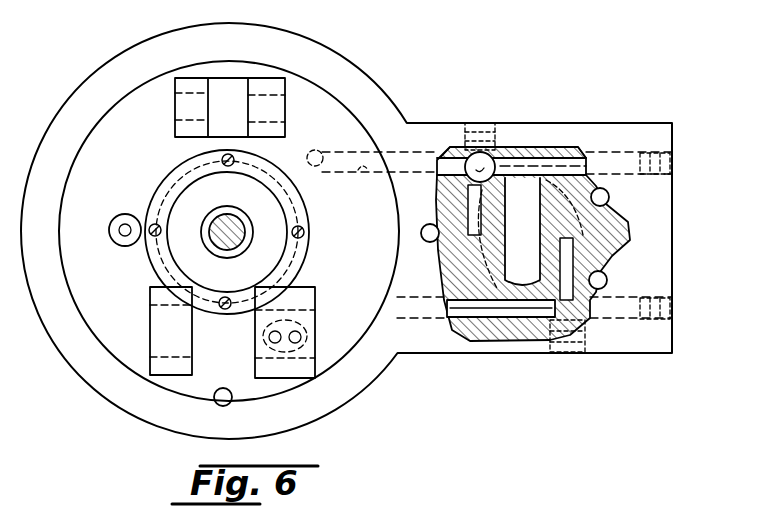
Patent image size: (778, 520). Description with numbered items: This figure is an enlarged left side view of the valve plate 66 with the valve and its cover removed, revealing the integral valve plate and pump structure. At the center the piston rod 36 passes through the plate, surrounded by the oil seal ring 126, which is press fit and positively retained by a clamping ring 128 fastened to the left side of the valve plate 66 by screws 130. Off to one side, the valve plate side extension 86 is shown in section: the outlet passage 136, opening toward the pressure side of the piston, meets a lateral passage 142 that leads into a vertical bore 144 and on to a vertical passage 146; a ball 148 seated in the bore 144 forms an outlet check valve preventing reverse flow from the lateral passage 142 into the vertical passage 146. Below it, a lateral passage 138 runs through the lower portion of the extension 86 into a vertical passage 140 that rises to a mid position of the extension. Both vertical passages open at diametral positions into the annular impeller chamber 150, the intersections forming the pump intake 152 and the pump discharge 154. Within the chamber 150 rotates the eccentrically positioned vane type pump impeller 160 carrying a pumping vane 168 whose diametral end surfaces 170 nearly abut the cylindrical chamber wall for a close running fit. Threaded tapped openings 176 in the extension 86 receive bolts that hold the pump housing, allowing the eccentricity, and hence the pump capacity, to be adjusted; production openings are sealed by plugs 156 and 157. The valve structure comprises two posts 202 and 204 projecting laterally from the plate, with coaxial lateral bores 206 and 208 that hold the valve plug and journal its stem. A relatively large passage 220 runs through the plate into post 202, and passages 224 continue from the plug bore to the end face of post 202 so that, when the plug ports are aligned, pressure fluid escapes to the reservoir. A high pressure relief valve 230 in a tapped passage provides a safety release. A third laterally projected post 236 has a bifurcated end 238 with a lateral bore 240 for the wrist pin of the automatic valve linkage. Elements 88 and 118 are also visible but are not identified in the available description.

The piston rod 36 is at (237, 220).
The valve plate 66 is at (380, 110).
The valve plate side extension 86 is at (618, 128).
The rim 88 is at (110, 366).
The hole 118 is at (224, 404).
The oil seal ring 126 is at (175, 246).
The clamping ring 128 is at (162, 196).
The screws 130 is at (305, 232).
The outlet passage 136 is at (316, 166).
The lateral passage 138 is at (473, 240).
The vertical passage 140 is at (501, 308).
The lateral passage 142 is at (364, 176).
The vertical bore 144 is at (466, 150).
The vertical passage 146 is at (470, 196).
The ball 148 is at (505, 148).
The impeller chamber 150 is at (501, 325).
The pump intake 152 is at (568, 247).
The pump discharge 154 is at (469, 214).
The plug 156 is at (485, 120).
The plug 157 is at (672, 170).
The pump impeller 160 is at (552, 192).
The pumping vane 168 is at (534, 213).
The diametral end surfaces 170 is at (545, 152).
The threaded tapped openings 176 is at (426, 242).
The post 202 is at (266, 378).
The post 204 is at (152, 340).
The lateral bore 206 is at (262, 344).
The lateral bore 208 is at (153, 306).
The passage 220 is at (268, 332).
The passages 224 is at (300, 340).
The high pressure relief valve 230 is at (123, 206).
The third laterally projected post 236 is at (225, 85).
The bifurcated end 238 is at (256, 106).
The lateral bore 240 is at (178, 98).